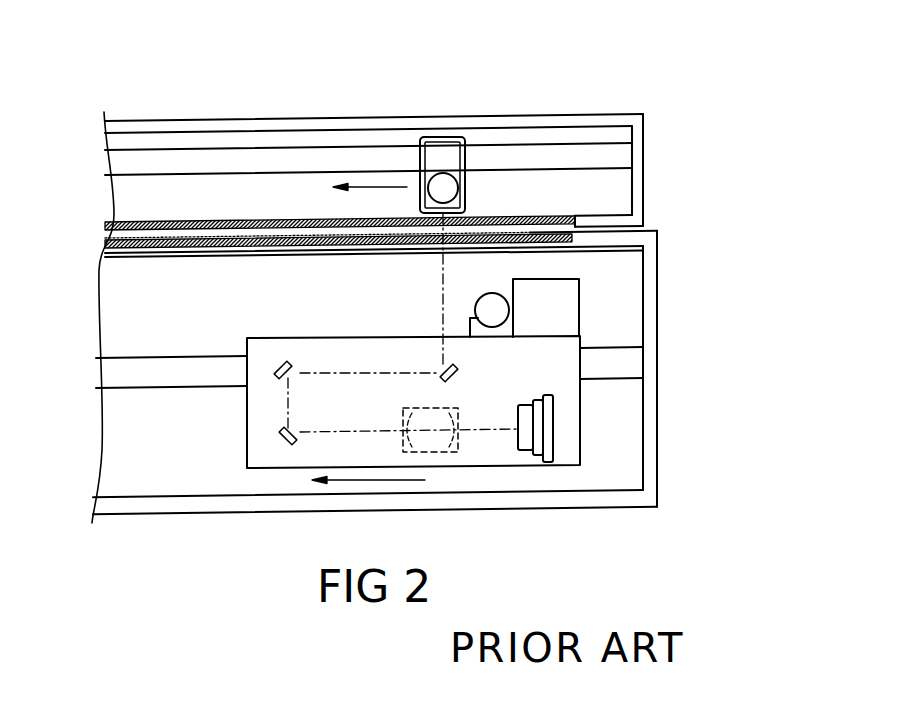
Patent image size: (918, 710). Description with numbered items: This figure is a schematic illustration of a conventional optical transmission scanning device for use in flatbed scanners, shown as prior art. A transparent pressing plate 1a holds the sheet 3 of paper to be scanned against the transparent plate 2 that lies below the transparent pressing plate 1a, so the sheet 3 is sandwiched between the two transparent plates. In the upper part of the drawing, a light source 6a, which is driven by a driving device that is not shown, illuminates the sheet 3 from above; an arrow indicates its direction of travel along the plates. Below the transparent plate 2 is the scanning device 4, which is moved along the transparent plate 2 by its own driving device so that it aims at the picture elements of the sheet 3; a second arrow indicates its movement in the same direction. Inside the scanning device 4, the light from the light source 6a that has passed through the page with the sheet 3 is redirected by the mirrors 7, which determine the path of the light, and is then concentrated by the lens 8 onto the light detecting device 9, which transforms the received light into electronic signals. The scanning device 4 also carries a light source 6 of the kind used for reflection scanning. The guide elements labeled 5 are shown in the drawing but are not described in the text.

The transparent pressing plate 1a is at (280, 223).
The transparent plate 2 is at (143, 257).
The sheet 3 is at (196, 223).
The scanning device 4 is at (490, 452).
The guide rail 5 is at (277, 432).
The light source 6 is at (493, 311).
The light source 6a is at (443, 175).
The mirrors 7 is at (282, 356).
The lens 8 is at (433, 447).
The light detecting device 9 is at (553, 420).